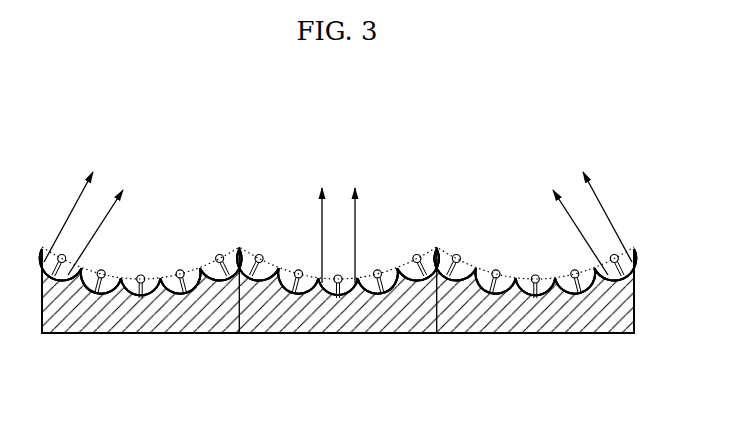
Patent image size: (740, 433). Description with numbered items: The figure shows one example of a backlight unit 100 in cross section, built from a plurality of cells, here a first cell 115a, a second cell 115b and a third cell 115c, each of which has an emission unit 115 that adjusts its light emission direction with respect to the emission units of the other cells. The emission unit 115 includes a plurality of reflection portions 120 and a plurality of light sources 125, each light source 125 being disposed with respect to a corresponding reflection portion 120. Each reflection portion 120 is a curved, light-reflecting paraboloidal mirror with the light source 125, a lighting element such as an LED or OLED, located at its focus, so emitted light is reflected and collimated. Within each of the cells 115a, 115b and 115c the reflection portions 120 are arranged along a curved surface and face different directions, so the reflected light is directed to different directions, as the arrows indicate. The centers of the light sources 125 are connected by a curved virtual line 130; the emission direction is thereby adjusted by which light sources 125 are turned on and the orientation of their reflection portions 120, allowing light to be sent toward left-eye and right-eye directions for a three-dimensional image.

The backlight unit 100 is at (356, 228).
The emission unit 115 is at (605, 318).
The first cell 115a is at (48, 166).
The second cell 115b is at (437, 166).
The third cell 115c is at (630, 166).
The reflection portion 120 is at (209, 266).
The light source 125 is at (183, 268).
The virtual line 130 is at (152, 271).